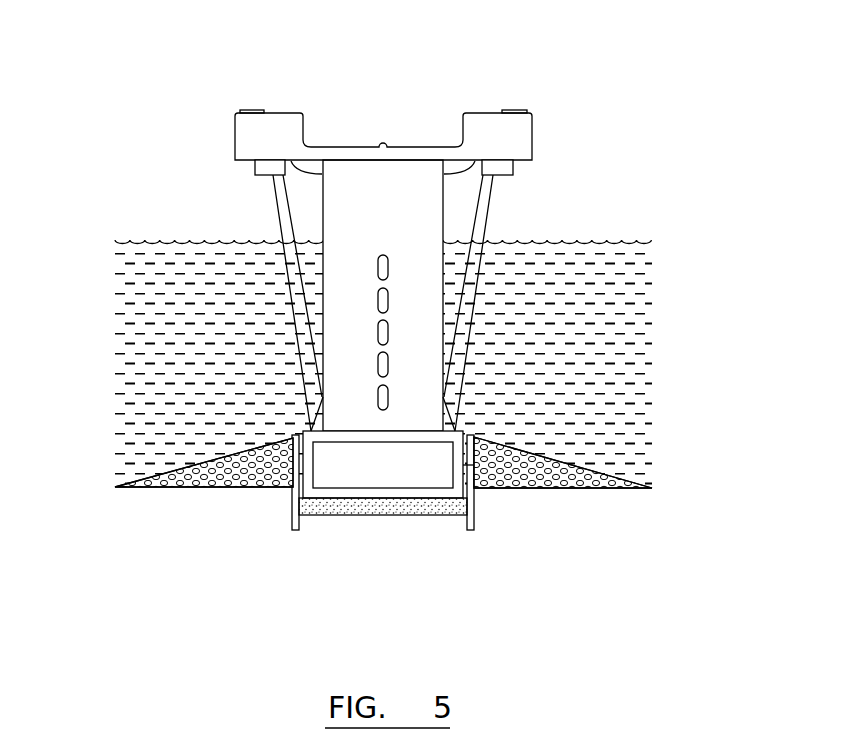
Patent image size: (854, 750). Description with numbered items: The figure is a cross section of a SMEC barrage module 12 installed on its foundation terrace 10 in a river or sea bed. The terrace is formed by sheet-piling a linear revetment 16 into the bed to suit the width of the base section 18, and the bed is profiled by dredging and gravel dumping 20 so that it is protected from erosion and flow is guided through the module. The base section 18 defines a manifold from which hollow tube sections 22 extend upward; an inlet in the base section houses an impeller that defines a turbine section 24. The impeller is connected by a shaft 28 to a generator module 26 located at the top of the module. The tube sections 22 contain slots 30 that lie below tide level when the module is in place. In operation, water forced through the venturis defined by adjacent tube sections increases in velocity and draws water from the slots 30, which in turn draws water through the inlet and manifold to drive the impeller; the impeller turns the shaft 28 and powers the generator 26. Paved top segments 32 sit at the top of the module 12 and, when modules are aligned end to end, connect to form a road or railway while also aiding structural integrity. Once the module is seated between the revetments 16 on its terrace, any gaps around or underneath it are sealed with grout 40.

The foundation terrace 10 is at (343, 507).
The SMEC barrage module 12 is at (407, 210).
The linear revetment 16 is at (476, 497).
The base section 18 is at (385, 462).
The gravel dumping 20 is at (573, 488).
The hollow tube sections 22 is at (354, 368).
The turbine section 24 is at (455, 422).
The generator module 26 is at (513, 135).
The shaft 28 is at (467, 318).
The slots 30 is at (377, 265).
The paved top segments 32 is at (350, 147).
The grout 40 is at (508, 488).